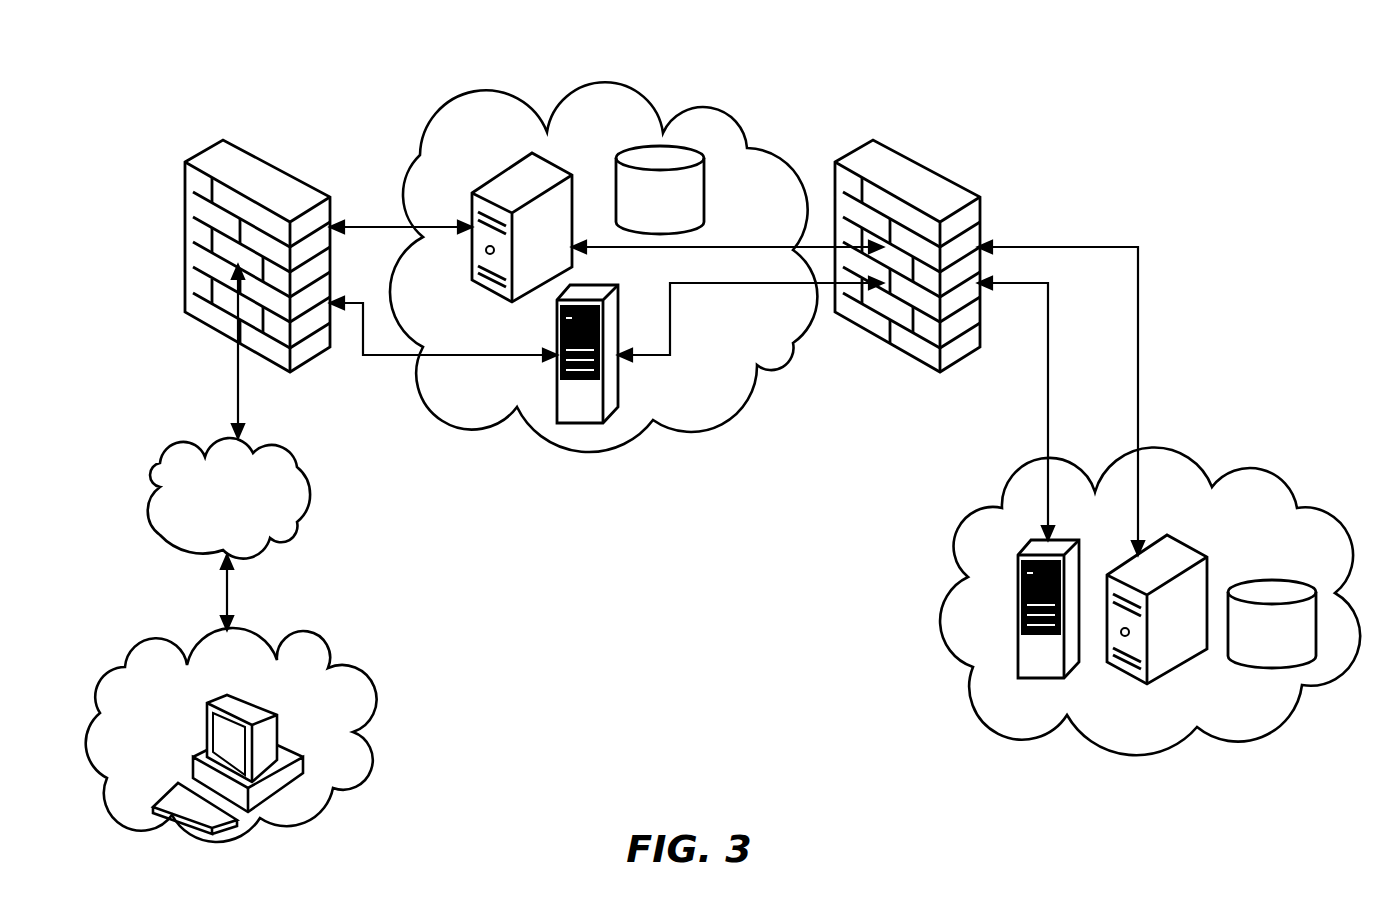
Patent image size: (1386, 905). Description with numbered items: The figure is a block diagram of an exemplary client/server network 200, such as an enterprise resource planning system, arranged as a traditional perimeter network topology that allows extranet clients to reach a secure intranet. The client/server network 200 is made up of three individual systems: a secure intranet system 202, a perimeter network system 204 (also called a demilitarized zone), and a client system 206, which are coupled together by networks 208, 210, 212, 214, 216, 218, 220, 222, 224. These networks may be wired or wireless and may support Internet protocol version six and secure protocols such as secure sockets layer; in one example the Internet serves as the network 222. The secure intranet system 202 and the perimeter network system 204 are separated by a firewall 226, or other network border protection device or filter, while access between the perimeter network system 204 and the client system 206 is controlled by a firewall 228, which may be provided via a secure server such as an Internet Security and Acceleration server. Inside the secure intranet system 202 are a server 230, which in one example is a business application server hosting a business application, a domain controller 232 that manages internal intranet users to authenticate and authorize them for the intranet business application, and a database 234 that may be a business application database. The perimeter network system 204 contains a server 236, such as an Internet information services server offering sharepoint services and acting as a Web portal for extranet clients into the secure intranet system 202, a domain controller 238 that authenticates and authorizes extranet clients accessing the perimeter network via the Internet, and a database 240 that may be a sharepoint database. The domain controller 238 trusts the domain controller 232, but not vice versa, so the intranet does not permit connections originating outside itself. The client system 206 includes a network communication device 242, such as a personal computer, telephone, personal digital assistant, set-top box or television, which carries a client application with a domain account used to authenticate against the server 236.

The client/server network 200 is at (651, 27).
The secure intranet system 202 is at (1280, 478).
The perimeter network system 204 is at (737, 123).
The client system 206 is at (320, 653).
The network 208 is at (1052, 355).
The network 210 is at (1085, 245).
The network 212 is at (725, 287).
The network 214 is at (727, 242).
The network 216 is at (368, 357).
The network 218 is at (352, 222).
The network 220 is at (237, 393).
The network 222 is at (308, 497).
The network 224 is at (232, 595).
The firewall 226 is at (932, 168).
The firewall 228 is at (285, 172).
The server 230 is at (1180, 540).
The domain controller 232 is at (1083, 553).
The database 234 is at (1288, 580).
The server 236 is at (567, 177).
The domain controller 238 is at (615, 318).
The database 240 is at (708, 207).
The network communication device 242 is at (282, 737).